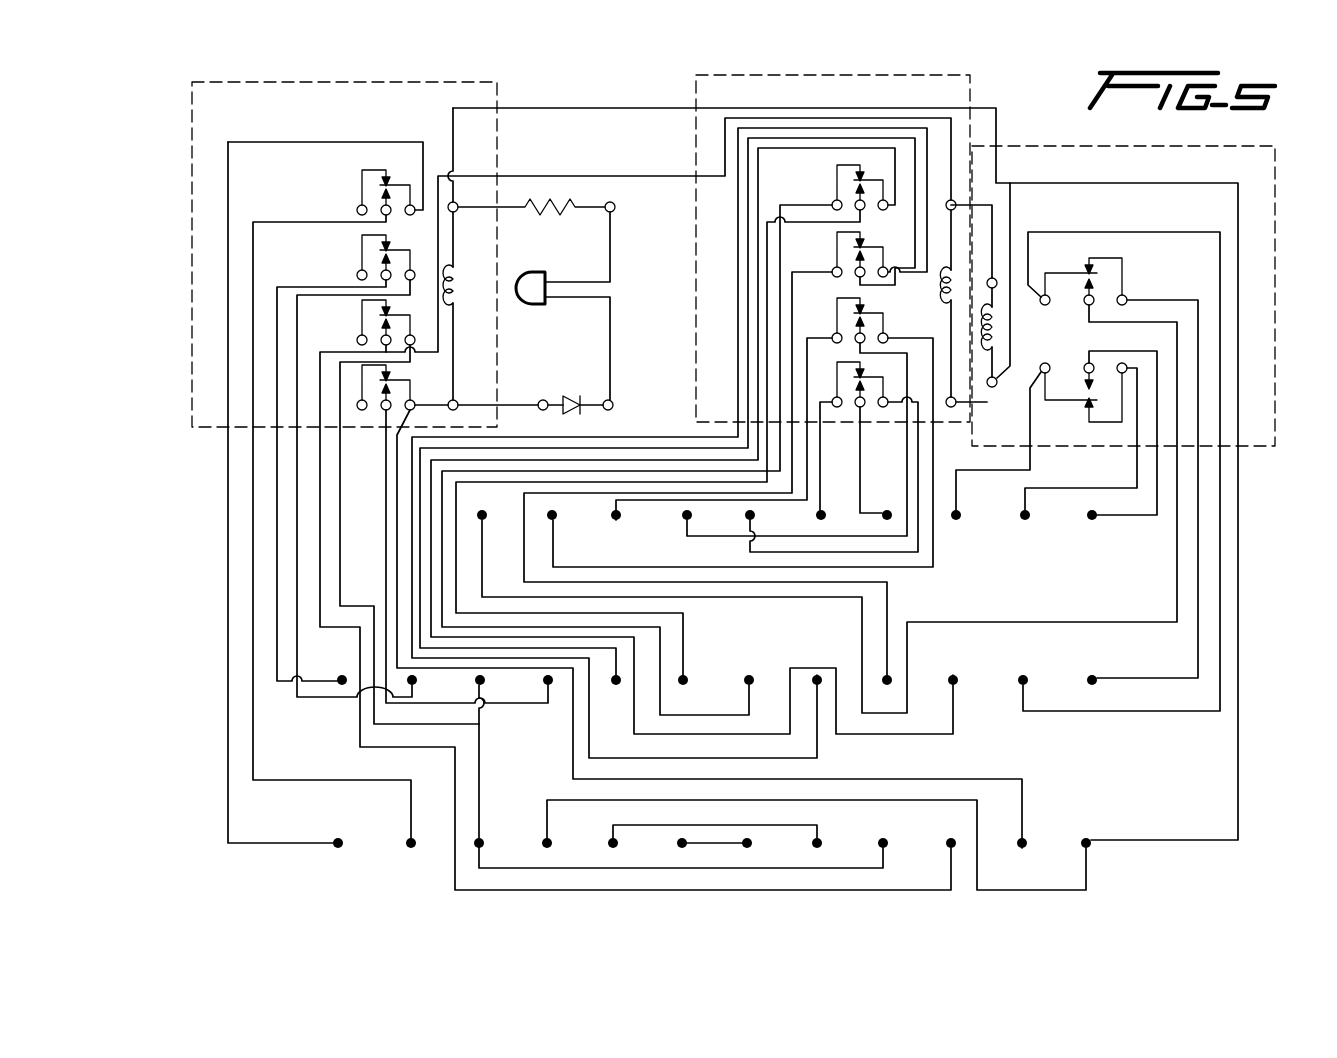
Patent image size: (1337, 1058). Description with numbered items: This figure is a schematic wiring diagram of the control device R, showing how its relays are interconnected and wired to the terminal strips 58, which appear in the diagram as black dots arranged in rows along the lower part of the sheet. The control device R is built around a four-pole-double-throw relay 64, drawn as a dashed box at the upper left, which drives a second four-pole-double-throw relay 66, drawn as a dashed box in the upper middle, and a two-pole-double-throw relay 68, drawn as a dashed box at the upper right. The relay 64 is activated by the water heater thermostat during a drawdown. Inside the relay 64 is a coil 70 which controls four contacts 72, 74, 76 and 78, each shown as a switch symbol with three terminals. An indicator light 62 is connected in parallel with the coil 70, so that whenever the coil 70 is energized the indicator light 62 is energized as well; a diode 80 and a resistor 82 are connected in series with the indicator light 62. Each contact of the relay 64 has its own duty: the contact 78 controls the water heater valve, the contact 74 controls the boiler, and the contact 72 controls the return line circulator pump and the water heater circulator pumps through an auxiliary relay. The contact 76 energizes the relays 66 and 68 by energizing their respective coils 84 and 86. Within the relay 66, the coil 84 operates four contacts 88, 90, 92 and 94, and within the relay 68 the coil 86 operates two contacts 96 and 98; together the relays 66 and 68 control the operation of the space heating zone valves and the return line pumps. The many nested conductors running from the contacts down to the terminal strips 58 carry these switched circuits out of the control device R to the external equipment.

The terminal strips 58 is at (1118, 522).
The indicator light 62 is at (540, 306).
The four-pole-double-throw relay 64 is at (192, 226).
The four-pole-double-throw relay 66 is at (696, 90).
The two-pole-double-throw relay 68 is at (1275, 282).
The coil 70 is at (460, 272).
The contact 72 is at (375, 187).
The contact 74 is at (377, 263).
The contact 76 is at (377, 333).
The contact 78 is at (403, 372).
The diode 80 is at (572, 397).
The resistor 82 is at (575, 205).
The coil 84 is at (945, 300).
The coil 86 is at (1000, 328).
The contact 88 is at (855, 188).
The contact 90 is at (858, 253).
The contact 92 is at (858, 319).
The contact 94 is at (848, 392).
The contact 96 is at (1105, 283).
The contact 98 is at (1097, 385).
The control device R is at (200, 588).